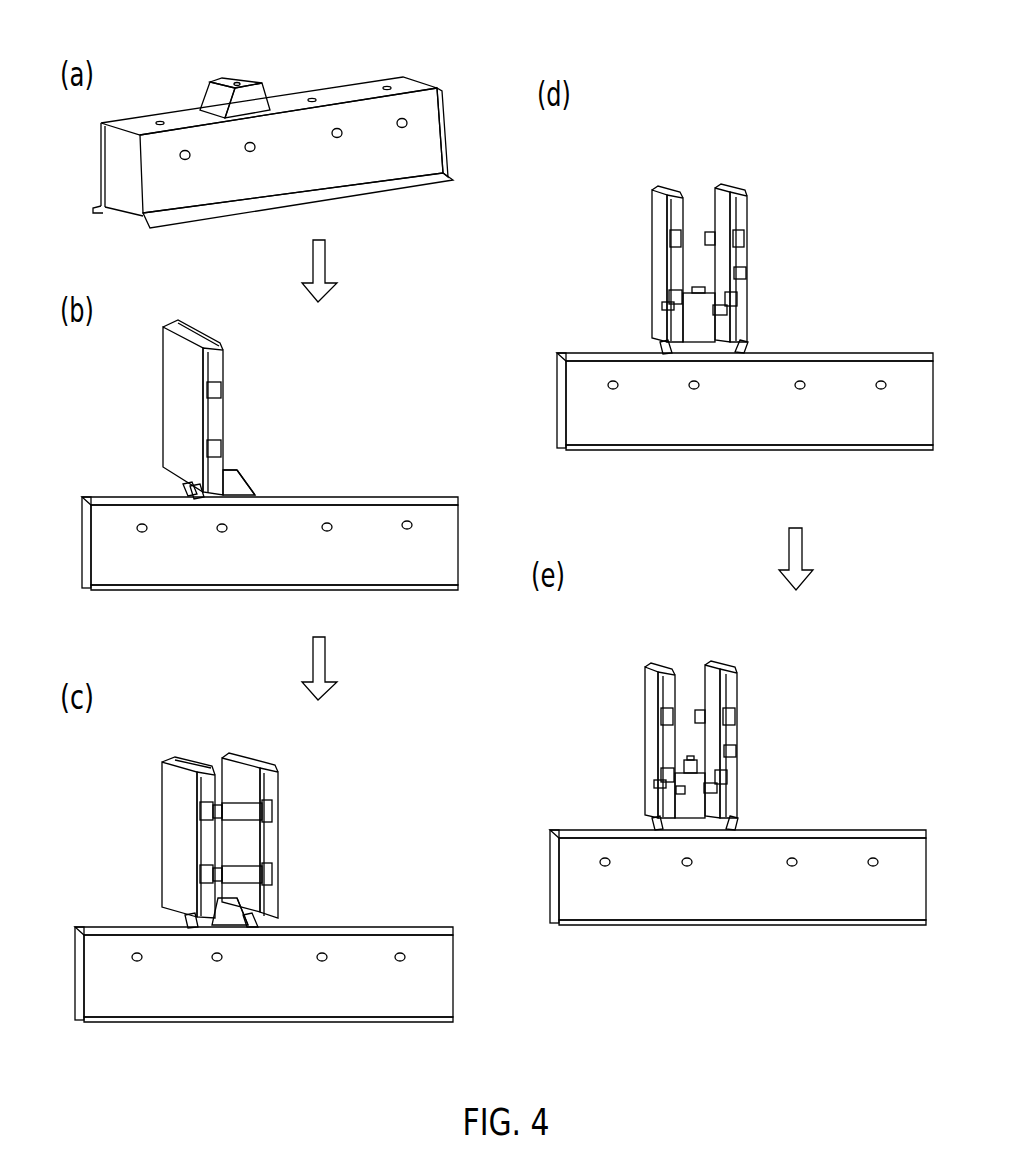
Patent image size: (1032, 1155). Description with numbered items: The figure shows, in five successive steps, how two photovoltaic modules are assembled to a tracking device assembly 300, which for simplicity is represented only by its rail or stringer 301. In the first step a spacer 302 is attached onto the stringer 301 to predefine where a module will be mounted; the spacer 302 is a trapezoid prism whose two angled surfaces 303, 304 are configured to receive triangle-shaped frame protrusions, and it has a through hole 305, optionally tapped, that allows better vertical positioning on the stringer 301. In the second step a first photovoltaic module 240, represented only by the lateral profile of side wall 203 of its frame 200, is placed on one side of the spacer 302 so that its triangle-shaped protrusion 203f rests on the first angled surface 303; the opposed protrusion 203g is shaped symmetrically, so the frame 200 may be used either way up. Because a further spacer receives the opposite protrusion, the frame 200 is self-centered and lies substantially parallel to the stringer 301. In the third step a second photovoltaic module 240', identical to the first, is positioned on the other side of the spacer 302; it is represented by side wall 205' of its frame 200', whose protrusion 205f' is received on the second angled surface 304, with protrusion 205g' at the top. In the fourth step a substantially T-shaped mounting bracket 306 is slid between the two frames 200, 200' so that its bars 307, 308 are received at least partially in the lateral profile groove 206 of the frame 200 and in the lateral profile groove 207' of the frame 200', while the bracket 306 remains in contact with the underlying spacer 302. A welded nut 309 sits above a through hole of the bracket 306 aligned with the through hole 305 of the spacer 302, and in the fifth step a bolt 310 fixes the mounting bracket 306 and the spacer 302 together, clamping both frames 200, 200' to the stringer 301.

The tracking device assembly 300 is at (504, 536).
The stringer 301 is at (398, 168).
The spacer 302 is at (255, 95).
The first angled surface 303 is at (211, 96).
The second angled surface 304 is at (263, 80).
The through hole 305 is at (239, 76).
The mounting bracket 306 is at (734, 298).
The bar 307 is at (670, 296).
The bar 308 is at (747, 273).
The welded nut 309 is at (699, 286).
The bolt 310 is at (691, 758).
The frame 200 is at (350, 529).
The photovoltaic module 240 is at (350, 529).
The side wall 203 is at (178, 405).
The protrusion 203g is at (216, 344).
The protrusion 203f is at (190, 486).
The lateral profile groove 206 is at (229, 446).
The frame 200' is at (549, 529).
The second photovoltaic module 240' is at (549, 529).
The side wall 205' is at (519, 529).
The protrusion 205g' is at (494, 451).
The protrusion 205f' is at (534, 623).
The lateral profile groove 207' is at (520, 587).